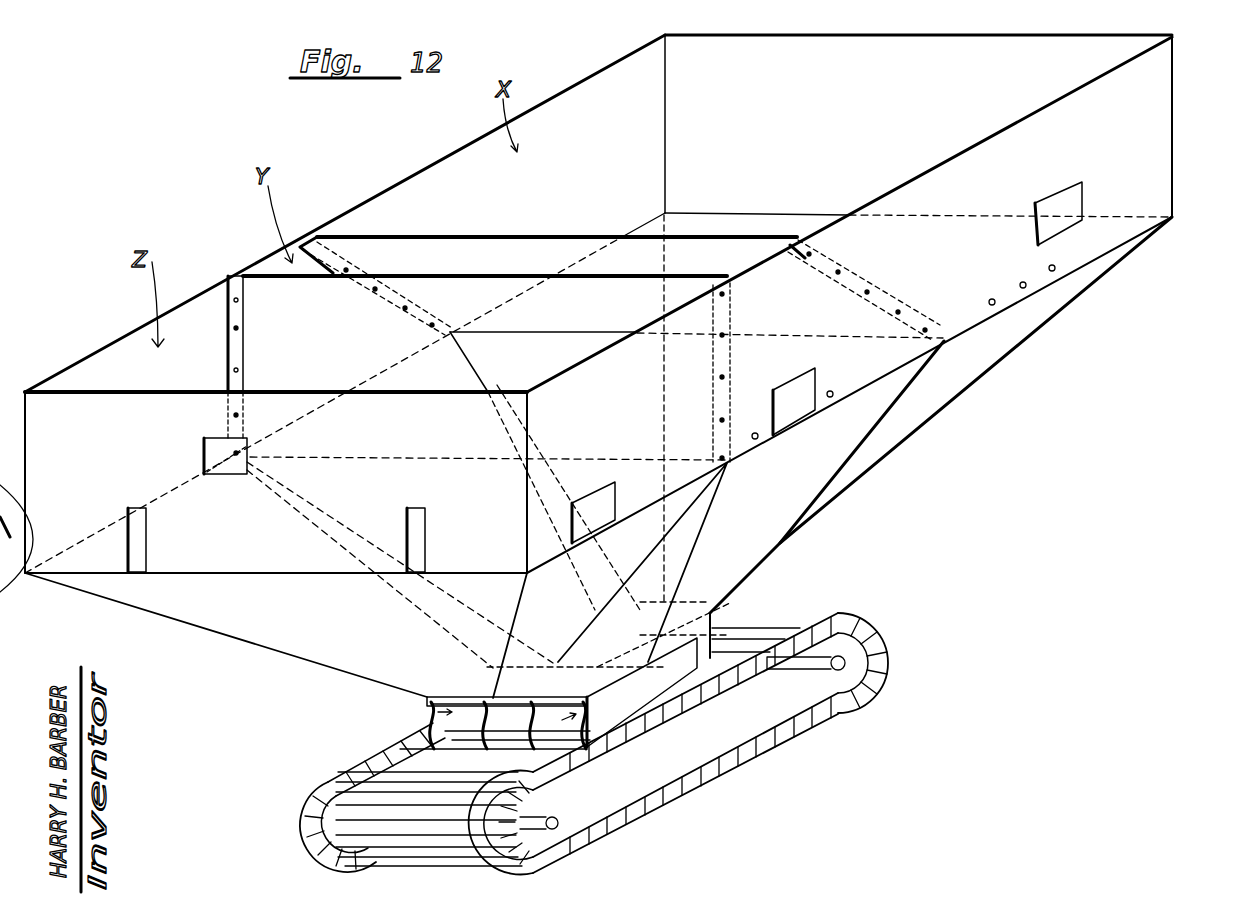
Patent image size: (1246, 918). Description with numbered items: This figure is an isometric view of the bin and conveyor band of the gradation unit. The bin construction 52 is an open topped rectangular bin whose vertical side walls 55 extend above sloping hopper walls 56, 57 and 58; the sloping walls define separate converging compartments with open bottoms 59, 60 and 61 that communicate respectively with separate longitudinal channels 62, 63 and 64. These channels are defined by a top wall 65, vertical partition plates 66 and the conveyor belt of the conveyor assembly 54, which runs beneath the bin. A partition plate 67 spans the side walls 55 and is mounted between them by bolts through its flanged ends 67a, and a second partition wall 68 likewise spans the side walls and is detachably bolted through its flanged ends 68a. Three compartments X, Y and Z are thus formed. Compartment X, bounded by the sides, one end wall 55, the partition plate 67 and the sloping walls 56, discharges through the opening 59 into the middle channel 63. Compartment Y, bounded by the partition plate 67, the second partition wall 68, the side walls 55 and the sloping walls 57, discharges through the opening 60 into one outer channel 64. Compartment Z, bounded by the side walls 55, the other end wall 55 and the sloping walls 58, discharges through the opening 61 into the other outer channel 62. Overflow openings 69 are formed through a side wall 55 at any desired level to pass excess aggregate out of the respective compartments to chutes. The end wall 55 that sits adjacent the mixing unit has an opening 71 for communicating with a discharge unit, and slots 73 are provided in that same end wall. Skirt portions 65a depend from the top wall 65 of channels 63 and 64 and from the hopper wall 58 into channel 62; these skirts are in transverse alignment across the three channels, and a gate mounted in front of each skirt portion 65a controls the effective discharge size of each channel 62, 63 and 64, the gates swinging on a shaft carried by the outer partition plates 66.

The bin construction 52 is at (978, 320).
The conveyor assembly 54 is at (780, 619).
The side walls 55 is at (1097, 57).
The sloping hopper walls 56 is at (933, 400).
The sloping hopper walls 57 is at (793, 480).
The sloping hopper walls 58 is at (318, 660).
The open bottom 59 is at (657, 607).
The open bottom 60 is at (618, 658).
The open bottom 61 is at (468, 685).
The longitudinal channel 62 is at (430, 707).
The longitudinal channel 63 is at (388, 747).
The longitudinal channel 64 is at (566, 731).
The top wall 65 is at (640, 733).
The skirt portions 65a is at (520, 702).
The vertical partition plates 66 is at (430, 725).
The partition plate 67 is at (502, 237).
The flanged ends 67a is at (305, 240).
The second partition wall 68 is at (268, 273).
The flanged ends 68a is at (232, 305).
The overflow openings 69 is at (1060, 203).
The opening 71 is at (228, 475).
The slots 73 is at (135, 540).